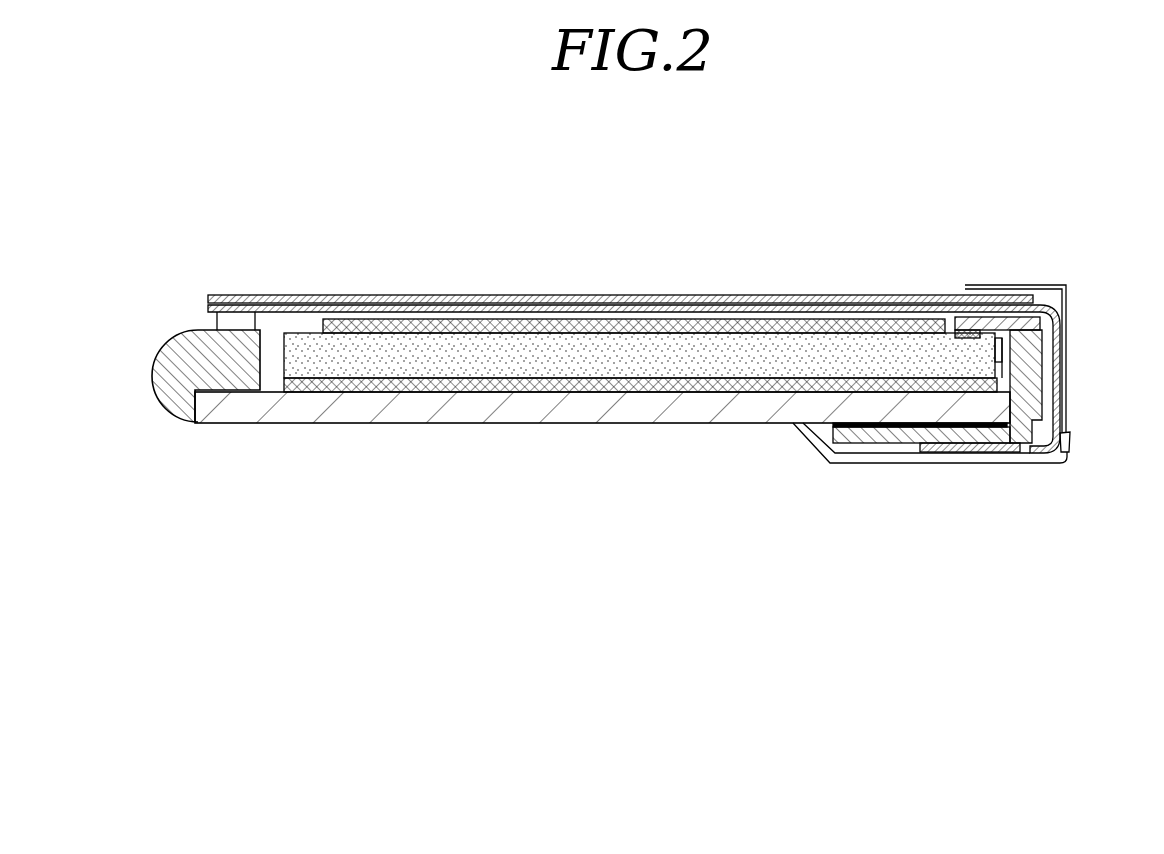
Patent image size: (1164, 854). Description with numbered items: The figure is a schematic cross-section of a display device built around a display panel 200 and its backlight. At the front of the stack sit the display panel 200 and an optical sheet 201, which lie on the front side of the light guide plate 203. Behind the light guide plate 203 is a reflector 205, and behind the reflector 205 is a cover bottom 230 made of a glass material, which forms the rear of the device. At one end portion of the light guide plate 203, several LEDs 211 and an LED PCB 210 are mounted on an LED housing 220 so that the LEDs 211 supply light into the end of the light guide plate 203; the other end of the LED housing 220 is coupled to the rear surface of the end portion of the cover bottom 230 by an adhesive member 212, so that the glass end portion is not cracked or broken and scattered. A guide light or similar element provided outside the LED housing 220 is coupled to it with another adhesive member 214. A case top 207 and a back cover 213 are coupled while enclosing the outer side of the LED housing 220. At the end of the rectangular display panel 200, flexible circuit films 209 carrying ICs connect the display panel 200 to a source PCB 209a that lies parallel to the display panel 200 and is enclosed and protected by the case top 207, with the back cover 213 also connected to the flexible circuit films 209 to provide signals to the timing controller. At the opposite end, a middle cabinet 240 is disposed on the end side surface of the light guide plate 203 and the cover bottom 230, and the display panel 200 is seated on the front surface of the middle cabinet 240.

The display panel 200 is at (745, 266).
The optical sheet 201 is at (420, 322).
The light guide plate 203 is at (384, 313).
The reflector 205 is at (328, 390).
The case top 207 is at (1068, 316).
The flexible circuit film 209 is at (1057, 448).
The source PCB 209a is at (947, 448).
The LED PCB 210 is at (1012, 330).
The LED 211 is at (998, 345).
The adhesive member 212 is at (857, 427).
The back cover 213 is at (915, 462).
The adhesive member 214 is at (968, 323).
The LED housing 220 is at (1025, 410).
The cover bottom 230 is at (280, 412).
The middle cabinet 240 is at (167, 390).